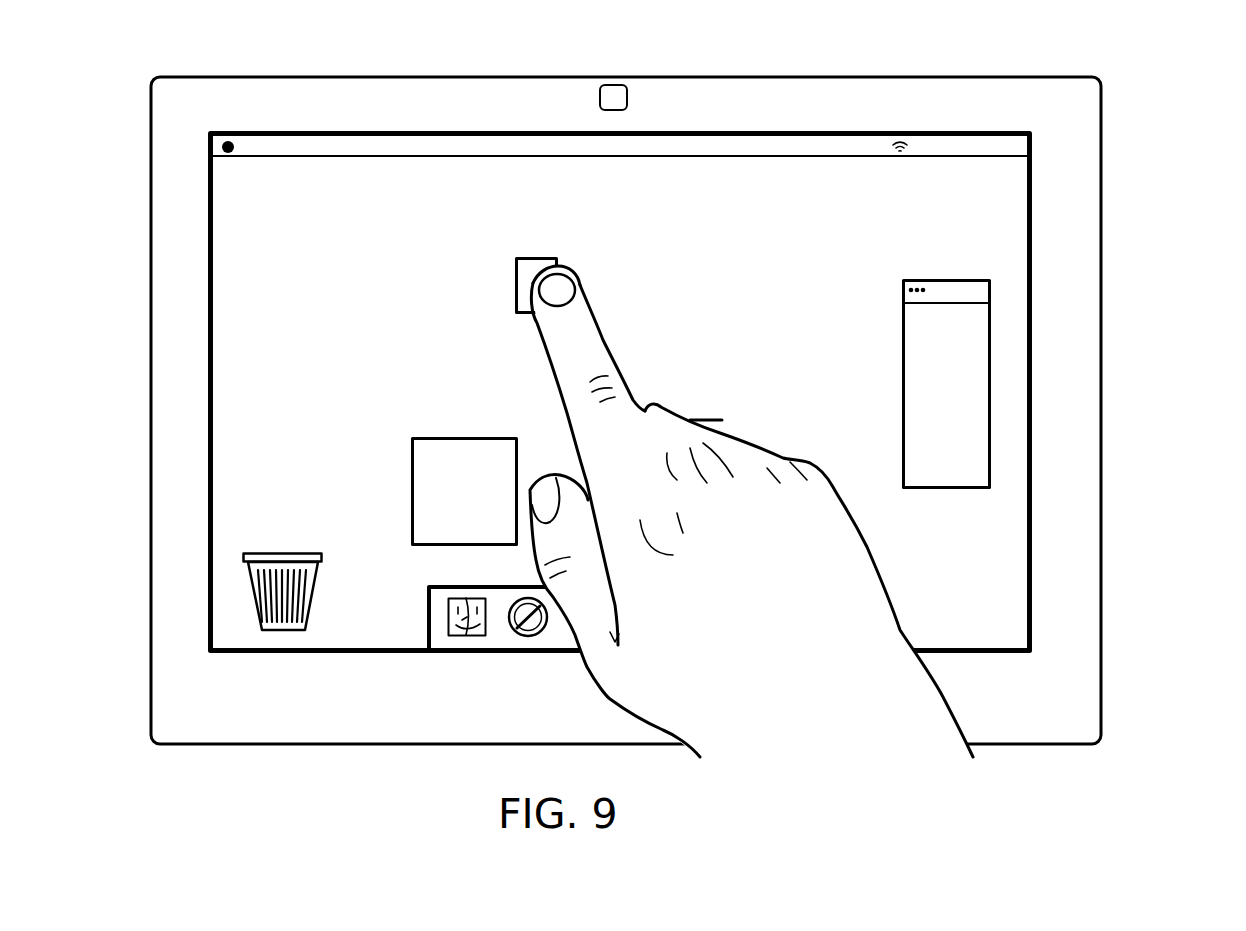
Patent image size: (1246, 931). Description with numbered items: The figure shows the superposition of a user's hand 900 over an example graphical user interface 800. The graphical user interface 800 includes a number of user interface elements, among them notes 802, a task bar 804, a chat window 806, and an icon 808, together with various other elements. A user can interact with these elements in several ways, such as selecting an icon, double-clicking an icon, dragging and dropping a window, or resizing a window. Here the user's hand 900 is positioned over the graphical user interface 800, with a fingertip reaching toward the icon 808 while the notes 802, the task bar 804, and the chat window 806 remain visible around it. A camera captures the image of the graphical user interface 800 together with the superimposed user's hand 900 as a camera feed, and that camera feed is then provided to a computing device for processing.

The graphical user interface 800 is at (1116, 127).
The notes 802 is at (427, 505).
The task bar 804 is at (443, 623).
The chat window 806 is at (976, 378).
The icon 808 is at (530, 262).
The user's hand 900 is at (877, 610).